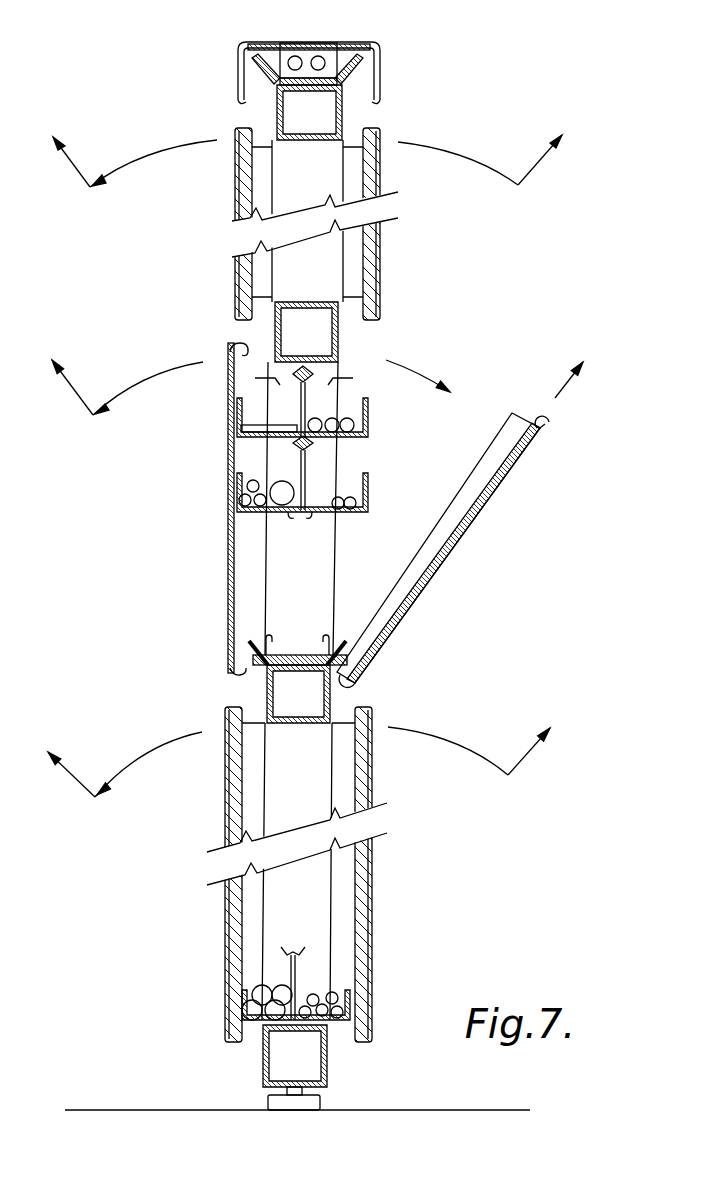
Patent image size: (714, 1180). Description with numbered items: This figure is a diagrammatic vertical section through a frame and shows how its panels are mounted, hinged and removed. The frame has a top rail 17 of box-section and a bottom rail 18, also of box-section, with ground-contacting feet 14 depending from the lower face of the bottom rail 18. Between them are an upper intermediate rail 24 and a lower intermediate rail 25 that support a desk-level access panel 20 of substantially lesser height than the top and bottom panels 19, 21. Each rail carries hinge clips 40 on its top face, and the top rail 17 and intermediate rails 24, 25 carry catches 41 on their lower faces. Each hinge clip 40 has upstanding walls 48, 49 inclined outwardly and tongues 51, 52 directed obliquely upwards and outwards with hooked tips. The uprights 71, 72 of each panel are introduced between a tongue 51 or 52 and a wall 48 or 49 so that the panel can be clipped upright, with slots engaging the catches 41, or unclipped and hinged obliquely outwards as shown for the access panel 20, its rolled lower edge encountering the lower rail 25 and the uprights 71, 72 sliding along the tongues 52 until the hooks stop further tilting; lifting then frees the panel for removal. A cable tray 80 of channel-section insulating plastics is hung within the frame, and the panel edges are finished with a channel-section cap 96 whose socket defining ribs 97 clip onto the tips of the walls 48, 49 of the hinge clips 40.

The ground-contacting feet 14 is at (315, 1103).
The top rail 17 is at (343, 95).
The bottom rail 18 is at (268, 1057).
The top panel 19 is at (230, 270).
The desk-level access panel 20 is at (228, 455).
The bottom panel 21 is at (230, 940).
The upper intermediate rail 24 is at (335, 320).
The lower intermediate rail 25 is at (283, 690).
The hinge clip 40 is at (295, 42).
The catch 41 is at (350, 375).
The upstanding wall 48 is at (268, 637).
The upstanding wall 49 is at (337, 637).
The upstanding tongue 51 is at (367, 650).
The upstanding tongue 52 is at (245, 658).
The upright 71 is at (258, 170).
The upright 72 is at (360, 153).
The cable tray 80 is at (380, 494).
The vertical cap 96 is at (377, 45).
The socket defining ribs 97 is at (260, 43).